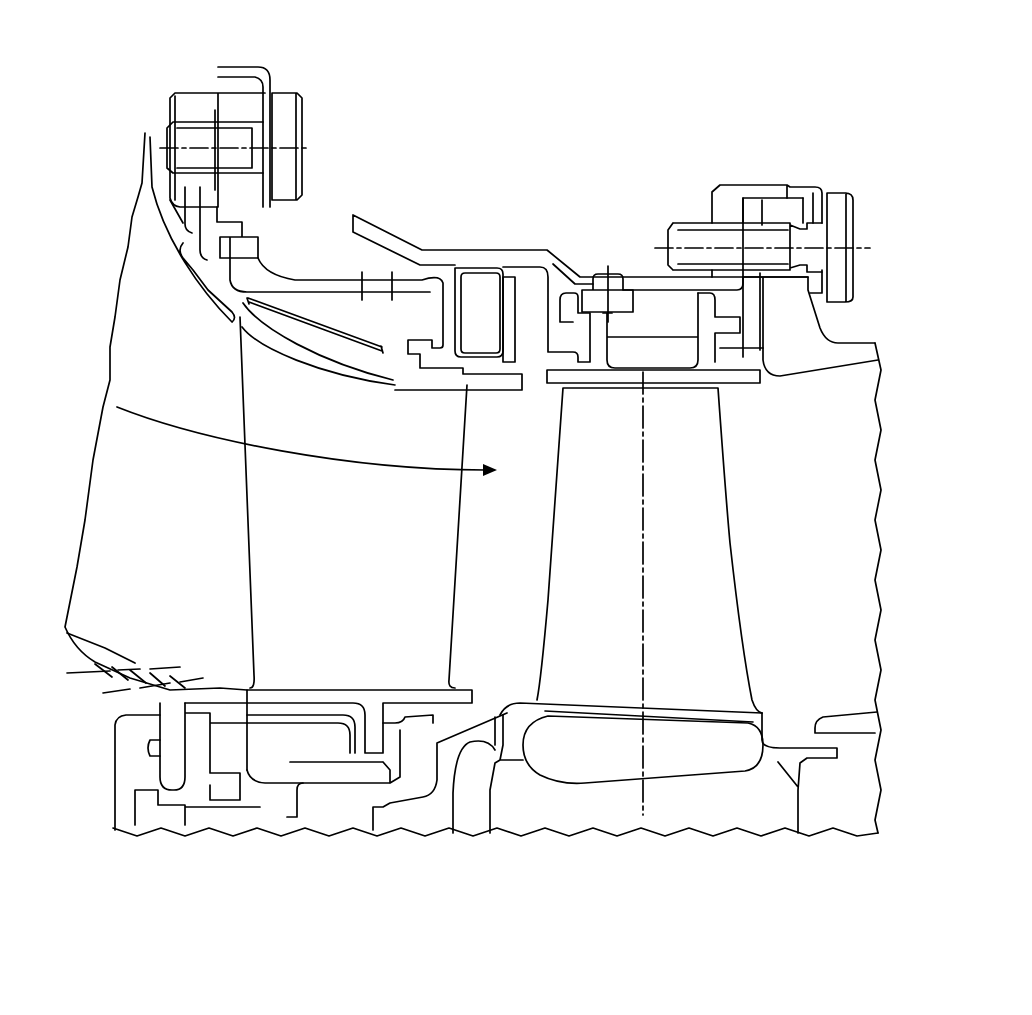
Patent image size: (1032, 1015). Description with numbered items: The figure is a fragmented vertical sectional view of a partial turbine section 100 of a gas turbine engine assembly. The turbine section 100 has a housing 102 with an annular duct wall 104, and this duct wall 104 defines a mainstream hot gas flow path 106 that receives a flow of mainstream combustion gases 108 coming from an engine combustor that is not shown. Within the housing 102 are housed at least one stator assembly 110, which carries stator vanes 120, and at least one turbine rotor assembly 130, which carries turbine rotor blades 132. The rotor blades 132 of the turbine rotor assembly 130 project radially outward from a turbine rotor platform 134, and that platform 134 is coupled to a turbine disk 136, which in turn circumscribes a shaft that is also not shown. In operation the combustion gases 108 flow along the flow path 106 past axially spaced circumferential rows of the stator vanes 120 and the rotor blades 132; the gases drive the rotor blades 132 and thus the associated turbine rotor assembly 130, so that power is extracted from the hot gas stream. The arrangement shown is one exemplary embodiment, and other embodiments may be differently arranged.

The turbine section 100 is at (833, 120).
The housing 102 is at (163, 290).
The annular duct wall 104 is at (485, 388).
The mainstream hot gas flow path 106 is at (112, 513).
The mainstream combustion gases 108 is at (322, 460).
The stator assembly 110 is at (236, 621).
The stator vanes 120 is at (442, 632).
The turbine rotor assembly 130 is at (757, 534).
The turbine rotor blades 132 is at (727, 450).
The turbine rotor platform 134 is at (762, 712).
The turbine disk 136 is at (552, 820).